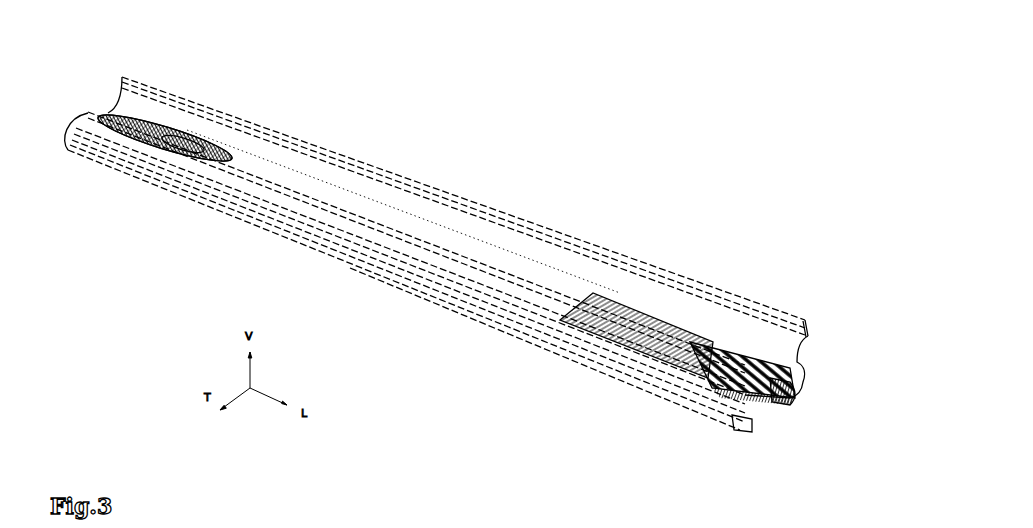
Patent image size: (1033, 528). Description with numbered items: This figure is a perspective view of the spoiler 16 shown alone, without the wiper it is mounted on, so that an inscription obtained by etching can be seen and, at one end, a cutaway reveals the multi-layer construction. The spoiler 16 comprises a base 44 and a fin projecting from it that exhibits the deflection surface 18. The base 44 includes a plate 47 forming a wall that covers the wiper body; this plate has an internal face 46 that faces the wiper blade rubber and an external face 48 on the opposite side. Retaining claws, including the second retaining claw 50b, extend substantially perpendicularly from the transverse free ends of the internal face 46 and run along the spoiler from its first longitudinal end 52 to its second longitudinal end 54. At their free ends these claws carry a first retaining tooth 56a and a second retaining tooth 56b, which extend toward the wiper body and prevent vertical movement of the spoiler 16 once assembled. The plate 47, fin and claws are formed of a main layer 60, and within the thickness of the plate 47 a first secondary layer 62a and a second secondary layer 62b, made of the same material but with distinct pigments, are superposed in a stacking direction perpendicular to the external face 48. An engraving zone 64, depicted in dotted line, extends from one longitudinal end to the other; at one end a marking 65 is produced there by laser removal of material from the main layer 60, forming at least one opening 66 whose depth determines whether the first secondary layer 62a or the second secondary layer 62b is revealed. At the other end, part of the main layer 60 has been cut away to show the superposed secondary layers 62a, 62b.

The spoiler 16 is at (560, 148).
The deflection surface 18 is at (395, 191).
The base 44 is at (410, 257).
The plate 47 is at (485, 280).
The internal face 46 is at (745, 412).
The external face 48 is at (305, 200).
The second retaining claw 50b is at (735, 428).
The first longitudinal end 52 is at (86, 110).
The second longitudinal end 54 is at (808, 372).
The first retaining tooth 56a is at (790, 398).
The second retaining tooth 56b is at (745, 422).
The main layer 60 is at (553, 325).
The first secondary layer 62a is at (640, 315).
The second secondary layer 62b is at (722, 365).
The engraving zone 64 is at (430, 226).
The marking 65 is at (183, 137).
The opening 66 is at (140, 125).